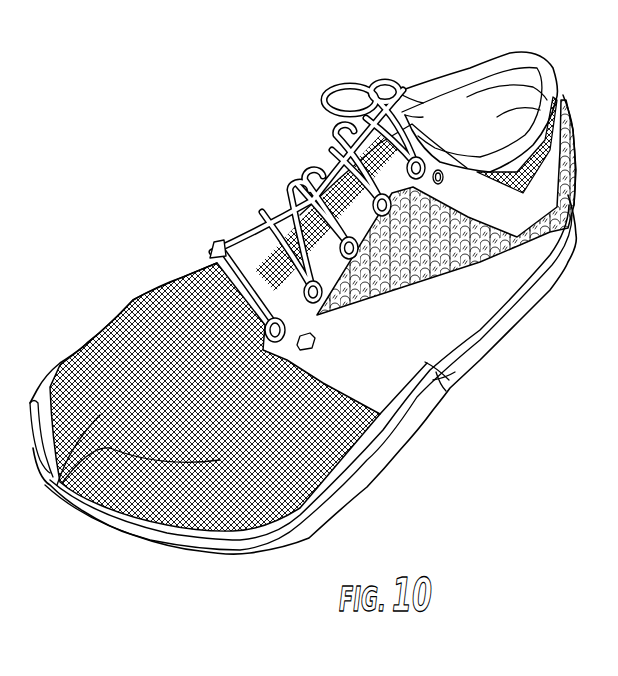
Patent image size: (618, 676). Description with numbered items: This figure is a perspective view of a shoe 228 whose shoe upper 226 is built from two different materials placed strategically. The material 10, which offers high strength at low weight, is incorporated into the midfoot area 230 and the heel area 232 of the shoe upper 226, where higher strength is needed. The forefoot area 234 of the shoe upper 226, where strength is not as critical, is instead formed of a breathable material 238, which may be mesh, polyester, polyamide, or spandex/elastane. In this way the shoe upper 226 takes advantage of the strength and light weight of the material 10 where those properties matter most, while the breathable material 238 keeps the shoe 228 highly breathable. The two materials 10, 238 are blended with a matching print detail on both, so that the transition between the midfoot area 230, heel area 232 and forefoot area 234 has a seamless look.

The material 10 is at (468, 215).
The shoe upper 226 is at (247, 423).
The shoe 228 is at (247, 230).
The midfoot area 230 is at (456, 372).
The heel area 232 is at (553, 222).
The forefoot area 234 is at (98, 340).
The breathable material 238 is at (57, 485).